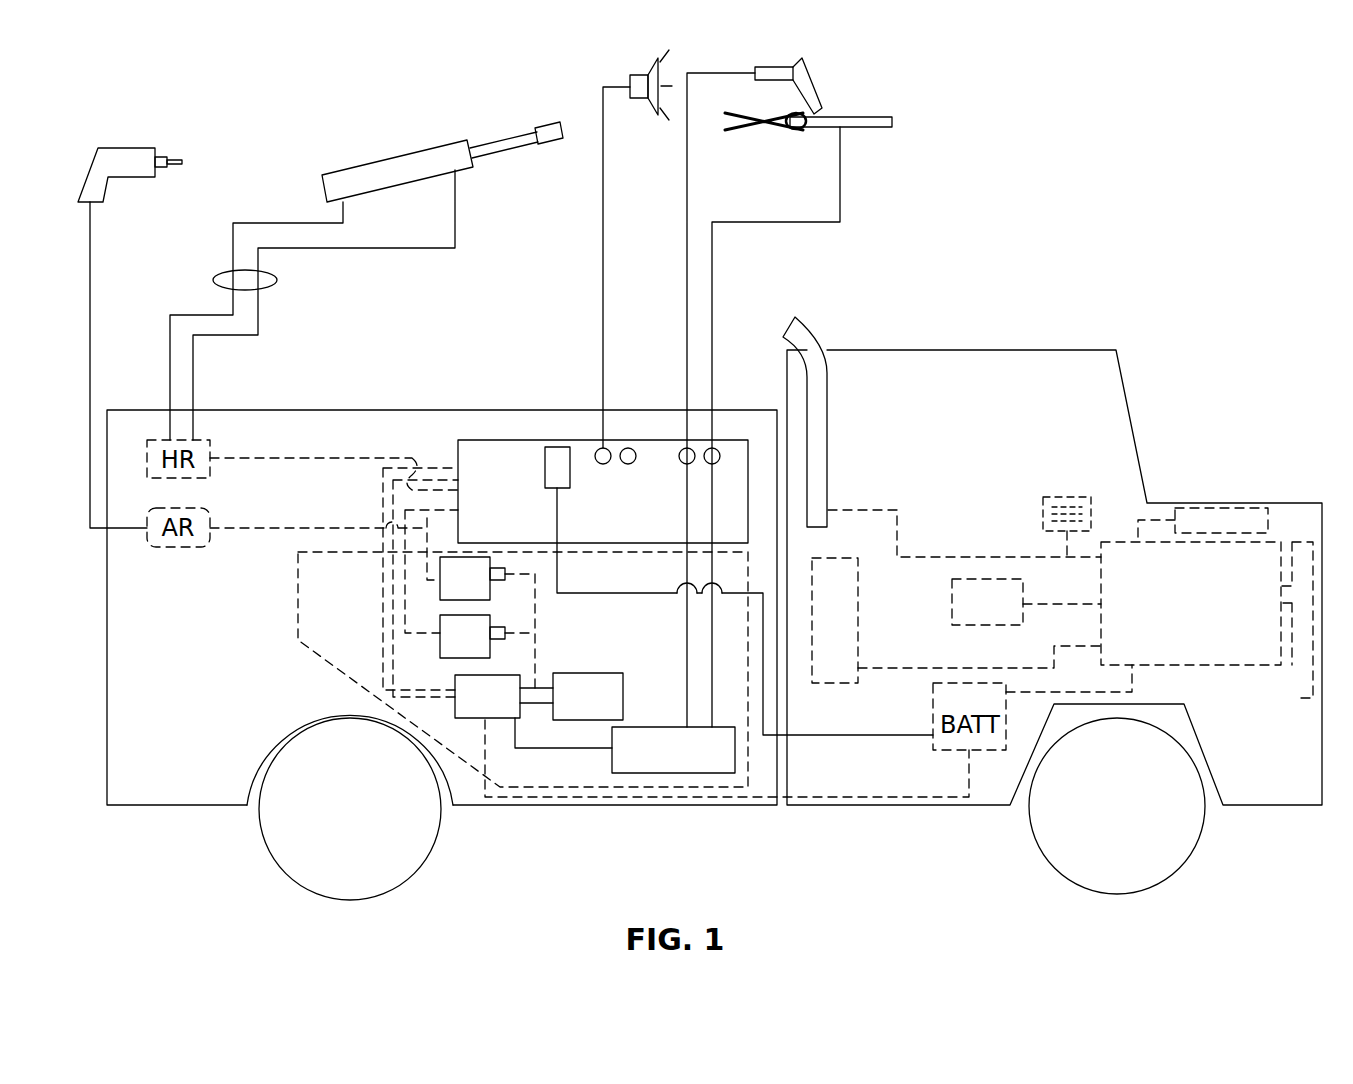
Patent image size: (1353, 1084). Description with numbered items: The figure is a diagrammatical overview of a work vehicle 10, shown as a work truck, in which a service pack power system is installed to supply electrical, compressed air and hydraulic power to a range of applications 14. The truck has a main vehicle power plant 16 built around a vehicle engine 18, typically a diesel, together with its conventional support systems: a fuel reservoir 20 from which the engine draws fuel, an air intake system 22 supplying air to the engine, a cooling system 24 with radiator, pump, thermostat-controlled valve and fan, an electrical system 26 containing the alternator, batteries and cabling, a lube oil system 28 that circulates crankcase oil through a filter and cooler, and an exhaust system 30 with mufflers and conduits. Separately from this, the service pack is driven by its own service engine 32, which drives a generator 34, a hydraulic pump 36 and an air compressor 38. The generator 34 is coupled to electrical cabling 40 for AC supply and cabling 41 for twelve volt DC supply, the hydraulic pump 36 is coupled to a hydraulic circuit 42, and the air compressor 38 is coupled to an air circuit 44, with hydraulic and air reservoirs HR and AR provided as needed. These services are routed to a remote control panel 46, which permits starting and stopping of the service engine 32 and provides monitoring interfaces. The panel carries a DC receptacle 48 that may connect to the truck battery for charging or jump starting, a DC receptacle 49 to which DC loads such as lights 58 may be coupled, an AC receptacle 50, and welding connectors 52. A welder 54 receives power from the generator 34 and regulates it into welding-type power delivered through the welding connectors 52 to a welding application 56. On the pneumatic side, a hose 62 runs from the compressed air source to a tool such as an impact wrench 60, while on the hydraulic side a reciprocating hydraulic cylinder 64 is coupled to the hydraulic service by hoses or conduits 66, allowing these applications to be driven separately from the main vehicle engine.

The work vehicle 10 is at (155, 826).
The applications 14 is at (485, 212).
The main vehicle power plant 16 is at (1183, 413).
The vehicle engine 18 is at (1200, 665).
The fuel reservoir 20 is at (835, 683).
The air intake system 22 is at (1205, 515).
The cooling system 24 is at (1305, 700).
The electrical system 26 is at (1043, 505).
The lube oil system 28 is at (950, 607).
The exhaust system 30 is at (828, 418).
The service engine 32 is at (570, 673).
The generator 34 is at (498, 718).
The hydraulic pump 36 is at (462, 658).
The air compressor 38 is at (490, 592).
The electrical cabling 40 is at (383, 632).
The electrical cabling 41 is at (393, 658).
The hydraulic circuit 42 is at (405, 590).
The air circuit 44 is at (427, 522).
The remote control panel 46 is at (728, 440).
The DC receptacle 48 is at (545, 447).
The DC receptacle 49 is at (601, 448).
The AC receptacle 50 is at (628, 464).
The welding connectors 52 is at (681, 448).
The welder 54 is at (668, 727).
The welding application 56 is at (872, 117).
The lights 58 is at (630, 76).
The impact wrench 60 is at (130, 148).
The hose 62 is at (90, 250).
The reciprocating hydraulic cylinder 64 is at (400, 156).
The hoses or conduits 66 is at (277, 280).